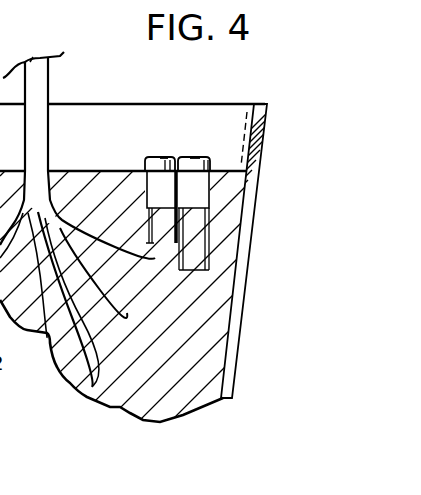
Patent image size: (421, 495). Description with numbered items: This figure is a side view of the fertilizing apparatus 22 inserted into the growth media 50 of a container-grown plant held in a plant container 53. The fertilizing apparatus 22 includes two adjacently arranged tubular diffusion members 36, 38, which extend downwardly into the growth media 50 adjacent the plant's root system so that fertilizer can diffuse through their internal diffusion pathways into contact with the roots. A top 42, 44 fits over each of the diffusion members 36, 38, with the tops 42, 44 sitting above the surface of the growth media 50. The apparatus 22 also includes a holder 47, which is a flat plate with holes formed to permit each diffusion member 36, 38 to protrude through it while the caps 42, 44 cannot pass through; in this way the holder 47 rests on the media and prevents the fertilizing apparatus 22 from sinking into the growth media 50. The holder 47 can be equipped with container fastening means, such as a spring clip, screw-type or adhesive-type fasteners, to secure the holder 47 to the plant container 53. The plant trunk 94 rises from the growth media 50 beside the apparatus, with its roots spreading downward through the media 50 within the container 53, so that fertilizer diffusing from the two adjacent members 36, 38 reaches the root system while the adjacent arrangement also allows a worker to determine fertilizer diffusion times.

The fertilizing apparatus 22 is at (179, 174).
The tubular diffusion member 36 is at (160, 200).
The tubular diffusion member 38 is at (194, 213).
The top 42 is at (152, 157).
The top 44 is at (196, 157).
The holder 47 is at (134, 170).
The growth media 50 is at (208, 310).
The plant container 53 is at (237, 363).
The plant trunk 94 is at (46, 80).